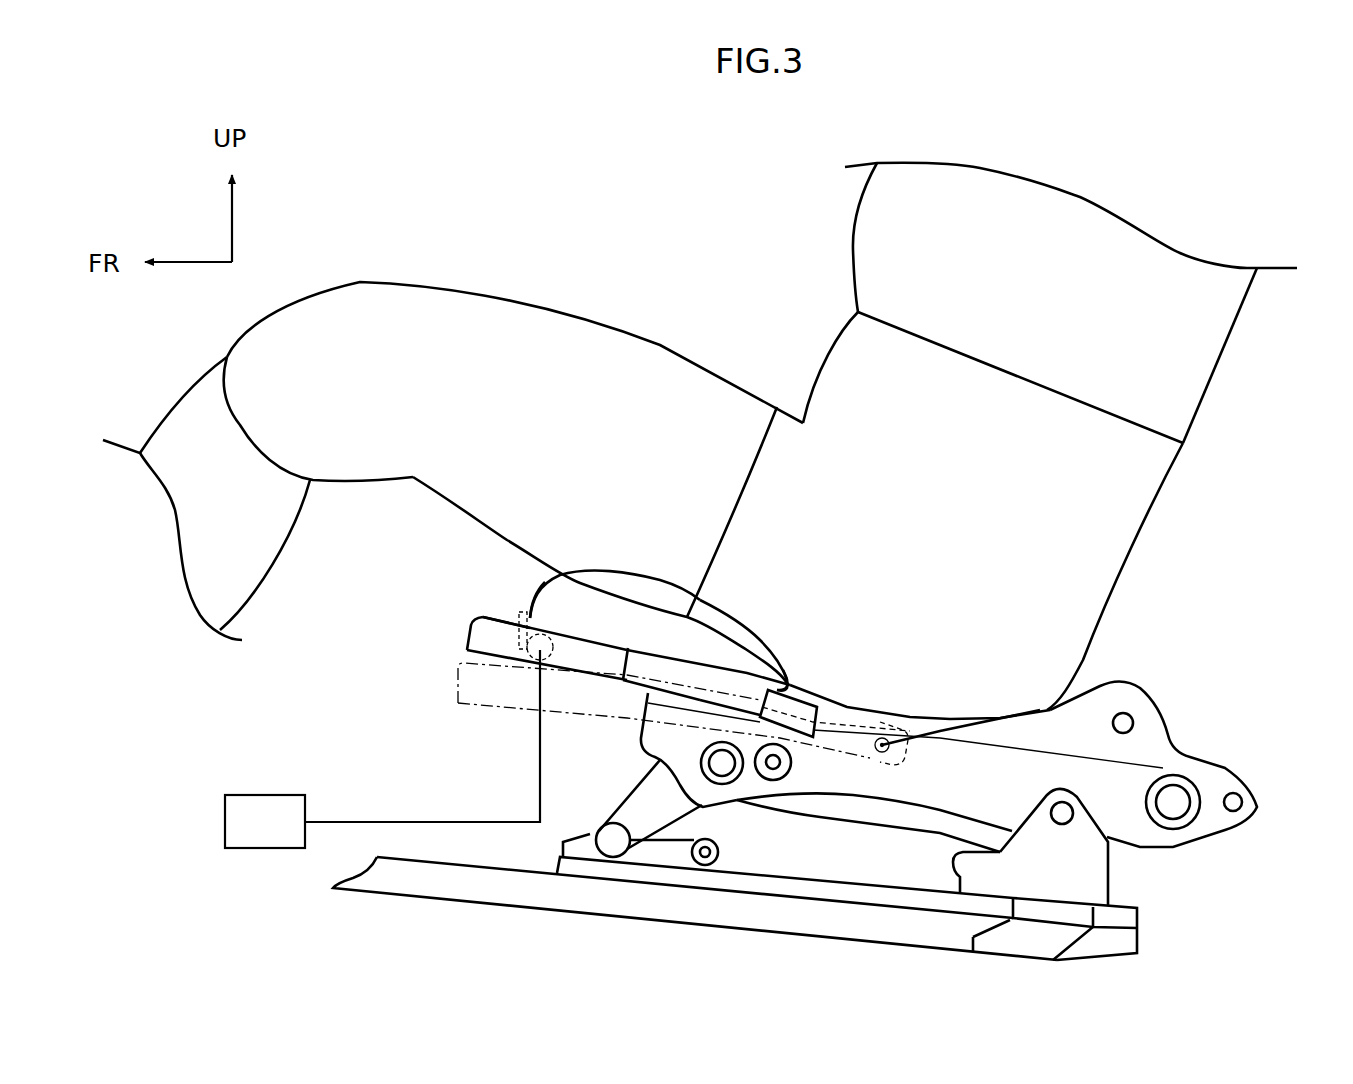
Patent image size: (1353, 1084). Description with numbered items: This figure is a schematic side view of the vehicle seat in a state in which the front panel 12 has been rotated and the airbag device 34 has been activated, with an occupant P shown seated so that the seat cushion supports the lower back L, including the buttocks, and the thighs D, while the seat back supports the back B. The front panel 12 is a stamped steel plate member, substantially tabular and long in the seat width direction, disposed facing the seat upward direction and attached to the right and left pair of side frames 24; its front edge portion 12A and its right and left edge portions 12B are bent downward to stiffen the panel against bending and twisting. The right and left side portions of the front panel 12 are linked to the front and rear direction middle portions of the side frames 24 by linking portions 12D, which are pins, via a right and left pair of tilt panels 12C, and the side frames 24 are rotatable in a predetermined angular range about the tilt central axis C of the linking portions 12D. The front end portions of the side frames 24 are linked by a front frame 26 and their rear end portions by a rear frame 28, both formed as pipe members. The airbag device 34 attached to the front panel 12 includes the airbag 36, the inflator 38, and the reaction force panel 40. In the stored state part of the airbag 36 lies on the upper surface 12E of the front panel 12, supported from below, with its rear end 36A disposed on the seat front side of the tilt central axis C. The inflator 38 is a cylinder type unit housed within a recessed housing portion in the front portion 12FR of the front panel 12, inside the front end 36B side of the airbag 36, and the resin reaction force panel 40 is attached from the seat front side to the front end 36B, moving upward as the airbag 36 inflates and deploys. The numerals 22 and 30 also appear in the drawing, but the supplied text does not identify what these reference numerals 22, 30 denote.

The front panel 12 is at (760, 656).
The edge portion on the front side of the front panel 12A is at (466, 650).
The edge portions on both right and left sides of the front panel 12B is at (620, 700).
The tilt panels 12C is at (662, 668).
The linking portions 12D is at (885, 752).
The upper surface of the front panel 12E is at (503, 617).
The front portion of the front panel 12FR is at (525, 612).
The seat cushion frame side member 22 is at (1240, 760).
The side frames 24 is at (1158, 722).
The front frame 26 is at (723, 785).
The rear frame 28 is at (1178, 823).
The control device 30 is at (262, 793).
The airbag device 34 is at (650, 560).
The airbag 36 is at (705, 606).
The rear end of the airbag 36A is at (800, 688).
The front end of the airbag 36B is at (526, 612).
The inflator 38 is at (554, 648).
The reaction force panel 40 is at (530, 617).
The occupant P is at (822, 207).
The thighs D is at (686, 372).
The back B is at (1220, 345).
The lower back L is at (1123, 567).
The tilt central axis C is at (884, 738).